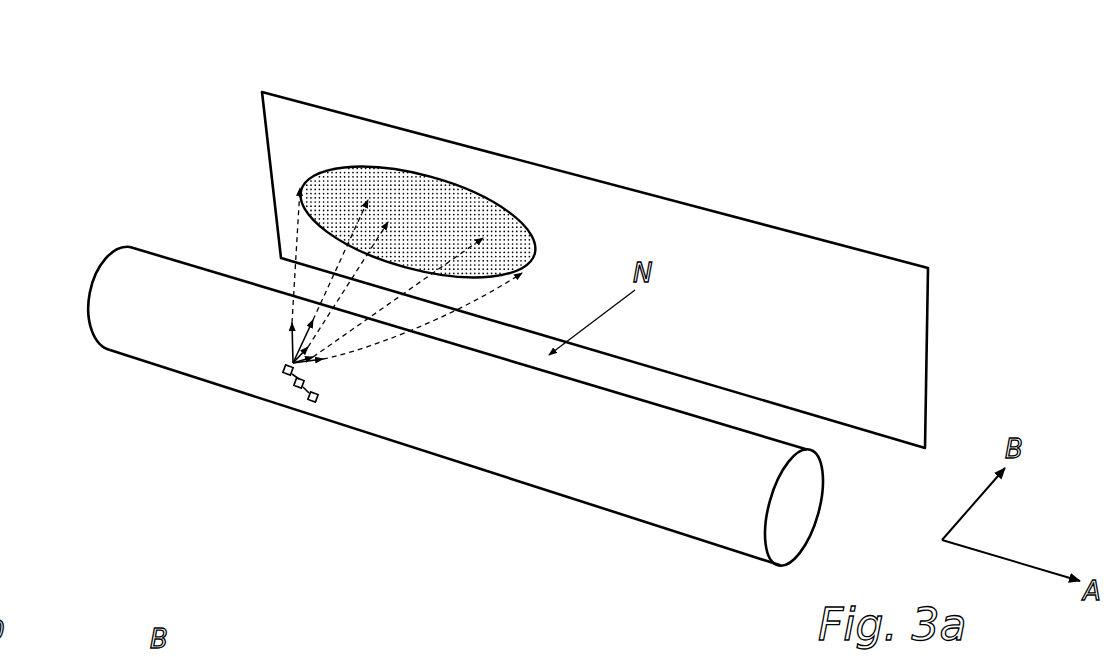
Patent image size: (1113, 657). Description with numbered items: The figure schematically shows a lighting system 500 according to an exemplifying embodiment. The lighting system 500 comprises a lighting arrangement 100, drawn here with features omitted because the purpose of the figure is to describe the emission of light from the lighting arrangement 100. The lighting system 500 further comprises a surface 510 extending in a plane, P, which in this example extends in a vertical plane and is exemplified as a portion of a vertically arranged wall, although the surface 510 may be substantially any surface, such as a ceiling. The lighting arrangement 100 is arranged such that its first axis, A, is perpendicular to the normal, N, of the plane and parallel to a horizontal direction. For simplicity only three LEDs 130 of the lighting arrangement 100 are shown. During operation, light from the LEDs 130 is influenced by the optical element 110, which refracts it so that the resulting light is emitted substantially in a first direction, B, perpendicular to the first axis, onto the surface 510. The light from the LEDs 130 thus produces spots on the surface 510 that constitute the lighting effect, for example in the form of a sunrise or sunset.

The lighting system 500 is at (147, 111).
The lighting arrangement 100 is at (432, 389).
The optical element 110 is at (678, 532).
The LEDs 130 is at (310, 401).
The surface 510 is at (928, 302).